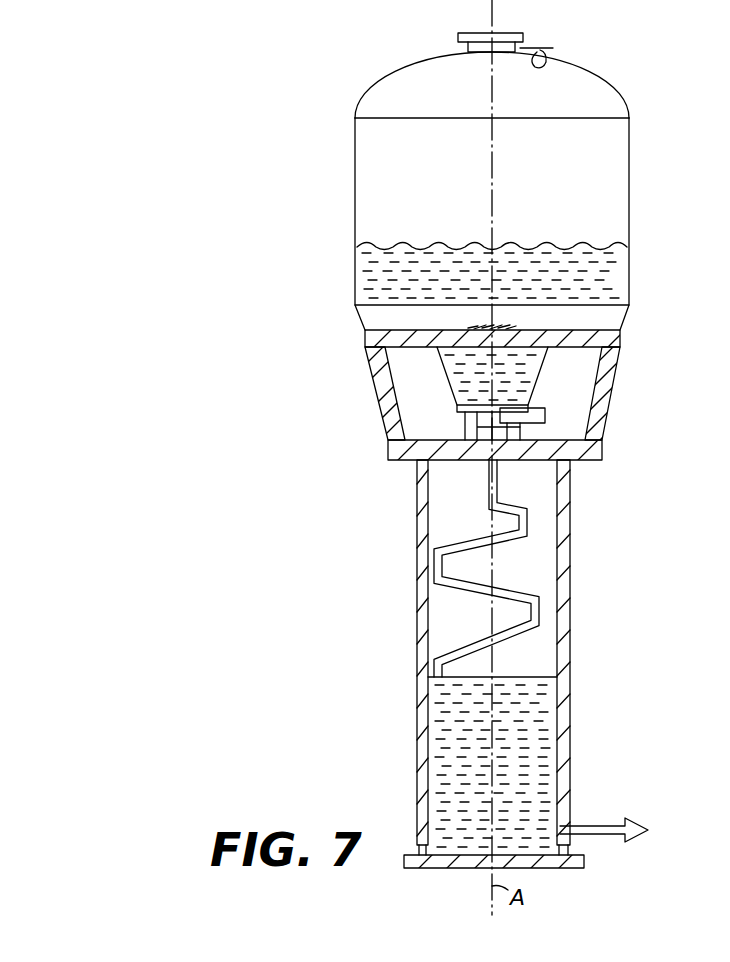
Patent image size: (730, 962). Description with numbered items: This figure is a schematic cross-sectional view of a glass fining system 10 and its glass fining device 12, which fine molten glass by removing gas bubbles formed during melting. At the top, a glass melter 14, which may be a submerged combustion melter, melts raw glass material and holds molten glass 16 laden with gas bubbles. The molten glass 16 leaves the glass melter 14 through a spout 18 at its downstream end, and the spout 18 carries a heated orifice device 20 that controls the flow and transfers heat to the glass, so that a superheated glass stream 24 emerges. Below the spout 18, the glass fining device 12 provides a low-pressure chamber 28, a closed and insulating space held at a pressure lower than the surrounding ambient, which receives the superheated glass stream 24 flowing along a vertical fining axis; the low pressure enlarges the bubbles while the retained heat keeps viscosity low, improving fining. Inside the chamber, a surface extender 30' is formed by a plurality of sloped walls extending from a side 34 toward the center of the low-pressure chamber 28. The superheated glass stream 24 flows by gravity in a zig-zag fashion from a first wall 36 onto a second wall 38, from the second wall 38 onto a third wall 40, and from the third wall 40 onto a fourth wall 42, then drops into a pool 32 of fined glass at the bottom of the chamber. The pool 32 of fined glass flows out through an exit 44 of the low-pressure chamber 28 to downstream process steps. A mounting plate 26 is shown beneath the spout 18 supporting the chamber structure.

The glass fining system 10 is at (320, 70).
The glass fining device 12 is at (298, 508).
The glass melter 14 is at (629, 147).
The molten glass 16 is at (603, 267).
The spout 18 is at (438, 404).
The heated orifice device 20 is at (490, 437).
The superheated glass stream 24 is at (498, 482).
The base plate 26 is at (478, 448).
The low-pressure chamber 28 is at (417, 525).
The surface extender 30' is at (542, 568).
The pool of fined glass 32 is at (468, 765).
The side 34 is at (434, 668).
The first wall 36 is at (455, 510).
The second wall 38 is at (440, 586).
The third wall 40 is at (440, 586).
The fourth wall 42 is at (517, 627).
The exit 44 is at (563, 822).